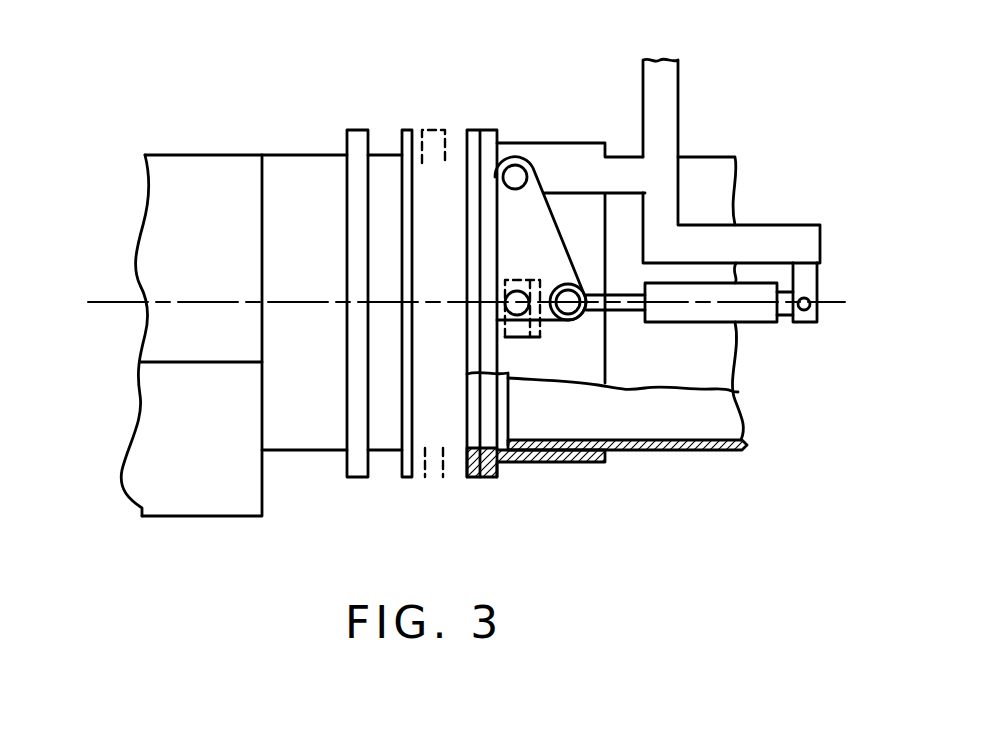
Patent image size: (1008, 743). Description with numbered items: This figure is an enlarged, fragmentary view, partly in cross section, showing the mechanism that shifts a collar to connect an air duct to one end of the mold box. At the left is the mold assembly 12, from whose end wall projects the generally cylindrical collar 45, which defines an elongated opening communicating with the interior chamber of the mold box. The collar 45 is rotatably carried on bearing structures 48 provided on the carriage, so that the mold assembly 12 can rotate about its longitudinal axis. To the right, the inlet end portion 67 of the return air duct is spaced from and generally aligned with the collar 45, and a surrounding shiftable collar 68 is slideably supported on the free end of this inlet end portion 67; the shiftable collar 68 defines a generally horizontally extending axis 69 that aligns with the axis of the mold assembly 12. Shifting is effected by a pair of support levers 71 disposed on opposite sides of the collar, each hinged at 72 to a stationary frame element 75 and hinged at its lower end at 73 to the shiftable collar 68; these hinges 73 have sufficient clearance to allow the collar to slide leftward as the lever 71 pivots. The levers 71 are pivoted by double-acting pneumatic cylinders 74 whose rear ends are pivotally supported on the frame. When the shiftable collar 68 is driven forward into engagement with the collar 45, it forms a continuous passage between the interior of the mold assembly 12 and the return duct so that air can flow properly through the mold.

The mold assembly 12 is at (179, 147).
The collar 45 is at (300, 168).
The bearing structures 48 is at (184, 298).
The inlet end portion 67 is at (723, 425).
The shiftable collar 68 is at (548, 453).
The horizontally extending axis 69 is at (842, 303).
The support levers 71 is at (530, 197).
The hinge 72 is at (516, 165).
The hinges 73 is at (517, 299).
The double-acting pneumatic cylinders 74 is at (763, 320).
The stationary frame element 75 is at (665, 110).